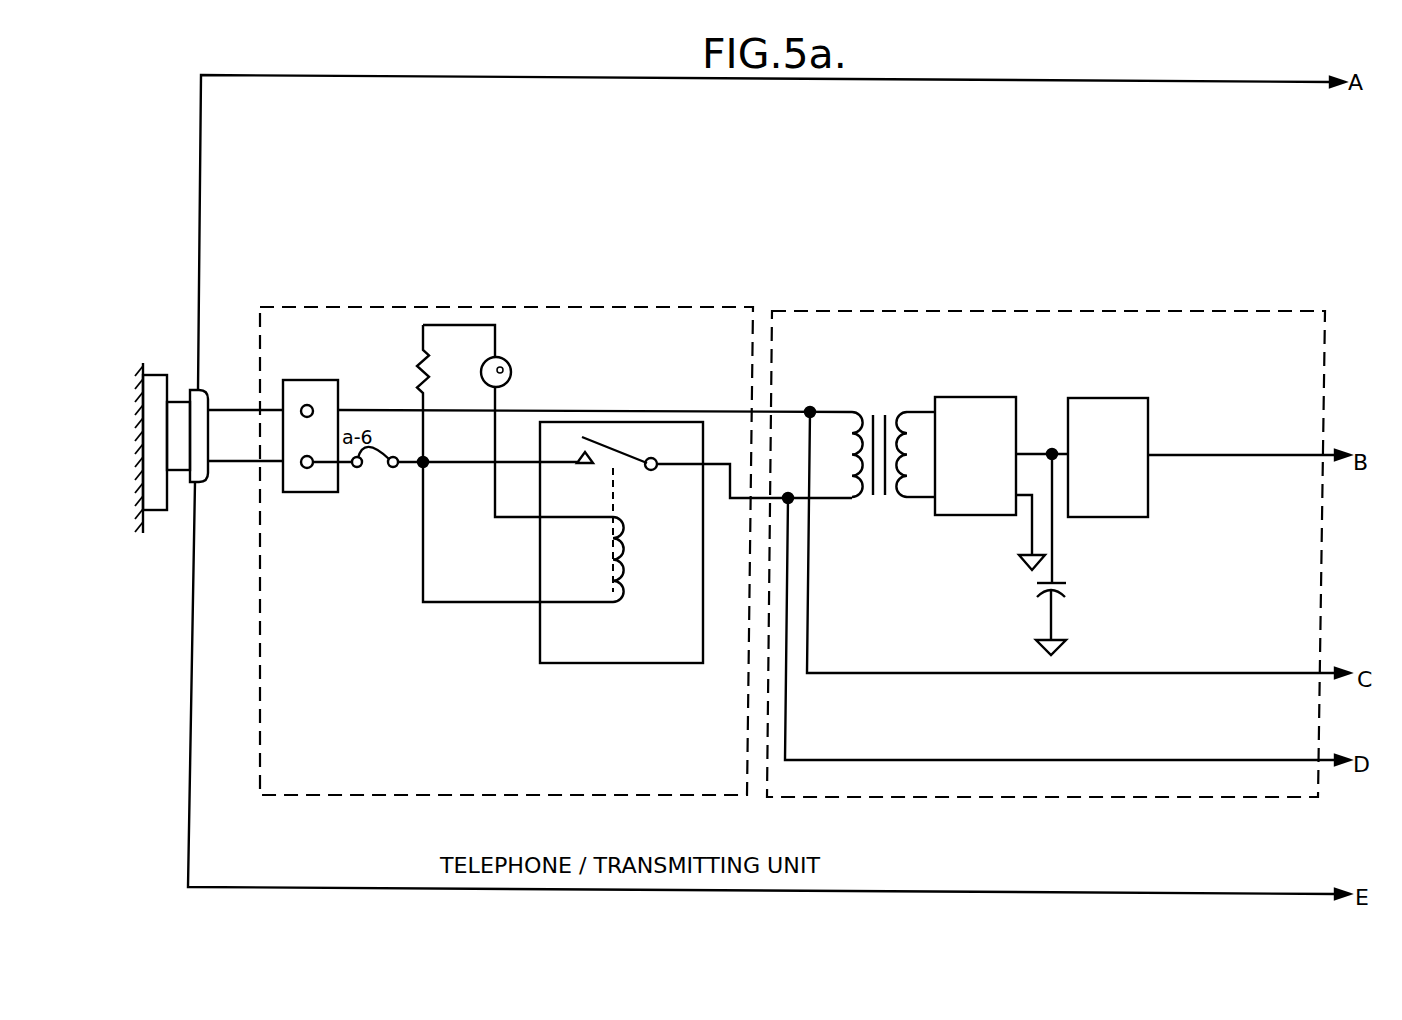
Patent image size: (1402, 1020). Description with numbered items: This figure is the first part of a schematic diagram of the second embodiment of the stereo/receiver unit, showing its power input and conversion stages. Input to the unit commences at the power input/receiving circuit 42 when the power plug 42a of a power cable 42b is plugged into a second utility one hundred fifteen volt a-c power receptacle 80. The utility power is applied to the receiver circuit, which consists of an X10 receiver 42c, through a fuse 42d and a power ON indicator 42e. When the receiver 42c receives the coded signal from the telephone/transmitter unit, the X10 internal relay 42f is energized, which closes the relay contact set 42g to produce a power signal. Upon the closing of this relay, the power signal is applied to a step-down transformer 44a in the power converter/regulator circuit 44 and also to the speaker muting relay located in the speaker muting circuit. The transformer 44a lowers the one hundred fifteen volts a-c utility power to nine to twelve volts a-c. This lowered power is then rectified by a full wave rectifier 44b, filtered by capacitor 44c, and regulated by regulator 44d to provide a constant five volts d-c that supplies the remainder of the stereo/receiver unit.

The utility a-c power receptacle 80 is at (157, 372).
The power plug 42a is at (193, 484).
The power cable 42b is at (177, 472).
The power input/receiving circuit 42 is at (506, 551).
The X10 receiver 42c is at (675, 663).
The fuse 42d is at (382, 472).
The power ON indicator 42e is at (512, 372).
The X10 internal relay 42f is at (612, 568).
The relay contact set 42g is at (600, 438).
The power converter/regulator circuit 44 is at (1046, 554).
The step-down transformer 44a is at (875, 488).
The full wave rectifier 44b is at (962, 495).
The capacitor 44c is at (1037, 587).
The regulator 44d is at (1107, 502).